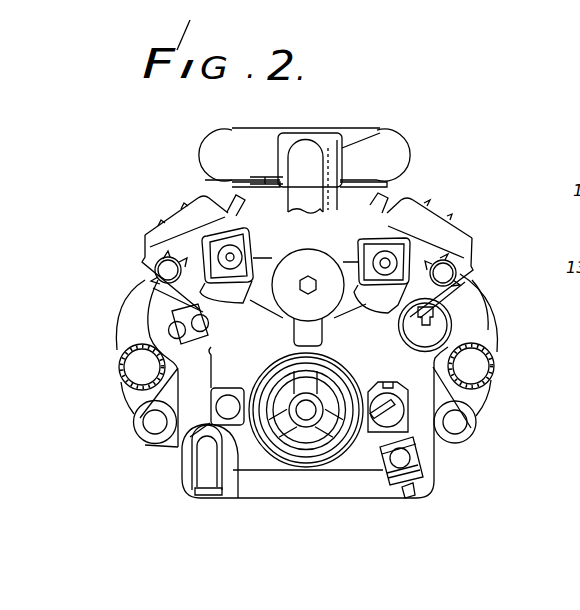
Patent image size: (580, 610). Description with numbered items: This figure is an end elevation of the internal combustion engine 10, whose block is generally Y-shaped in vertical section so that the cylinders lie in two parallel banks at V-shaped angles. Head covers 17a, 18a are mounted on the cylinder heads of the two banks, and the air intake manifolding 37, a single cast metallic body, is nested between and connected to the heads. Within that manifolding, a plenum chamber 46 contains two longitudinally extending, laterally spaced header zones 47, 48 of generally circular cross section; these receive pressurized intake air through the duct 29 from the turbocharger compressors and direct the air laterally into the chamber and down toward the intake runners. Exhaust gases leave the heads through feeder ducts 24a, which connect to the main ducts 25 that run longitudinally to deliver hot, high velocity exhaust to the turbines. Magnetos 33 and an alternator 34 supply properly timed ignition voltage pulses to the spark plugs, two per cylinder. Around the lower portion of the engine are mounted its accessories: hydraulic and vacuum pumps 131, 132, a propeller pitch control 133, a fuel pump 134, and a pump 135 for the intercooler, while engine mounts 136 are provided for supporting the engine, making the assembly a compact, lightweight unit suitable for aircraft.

The internal combustion engine 10 is at (180, 502).
The head cover 17a is at (167, 212).
The head cover 18a is at (447, 215).
The feeder duct 24a is at (480, 296).
The main duct 25 is at (120, 358).
The duct 29 is at (305, 160).
The magneto 33 is at (363, 242).
The alternator 34 is at (328, 300).
The air intake manifolding 37 is at (266, 197).
The chamber 46 is at (394, 117).
The header zone 47 is at (207, 150).
The header zone 48 is at (403, 147).
The hydraulic pump 131 is at (172, 315).
The vacuum pump 132 is at (438, 325).
The propeller pitch control 133 is at (408, 425).
The fuel pump 134 is at (418, 447).
The pump for the intercooler 135 is at (236, 470).
The engine mounts 136 is at (143, 447).